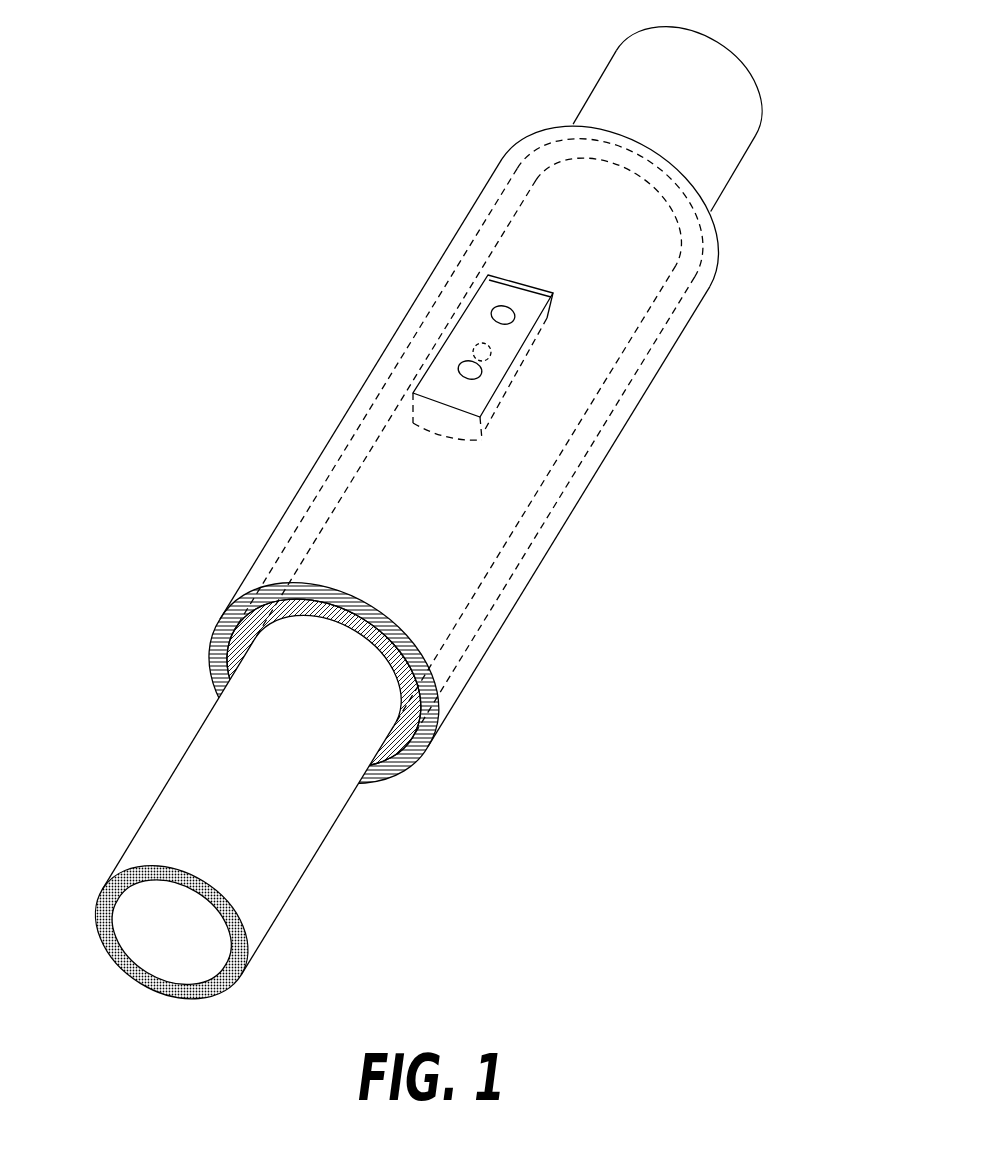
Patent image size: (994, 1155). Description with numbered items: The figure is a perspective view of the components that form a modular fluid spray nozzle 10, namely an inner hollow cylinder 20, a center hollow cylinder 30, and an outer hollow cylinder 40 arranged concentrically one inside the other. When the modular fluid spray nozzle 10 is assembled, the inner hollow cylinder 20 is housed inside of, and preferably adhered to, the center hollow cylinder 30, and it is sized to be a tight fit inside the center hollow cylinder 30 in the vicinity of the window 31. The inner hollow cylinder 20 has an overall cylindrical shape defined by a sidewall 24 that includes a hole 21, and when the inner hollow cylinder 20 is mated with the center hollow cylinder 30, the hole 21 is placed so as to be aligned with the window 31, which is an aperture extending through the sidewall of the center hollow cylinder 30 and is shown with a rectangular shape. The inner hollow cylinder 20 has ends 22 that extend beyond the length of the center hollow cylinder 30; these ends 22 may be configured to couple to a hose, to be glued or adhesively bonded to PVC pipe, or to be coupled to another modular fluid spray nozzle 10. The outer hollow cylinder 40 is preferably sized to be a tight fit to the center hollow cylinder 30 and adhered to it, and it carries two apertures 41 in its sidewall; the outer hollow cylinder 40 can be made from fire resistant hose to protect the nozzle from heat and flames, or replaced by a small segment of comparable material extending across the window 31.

The modular fluid spray nozzle 10 is at (280, 490).
The inner hollow cylinder 20 is at (623, 98).
The hole 21 is at (493, 360).
The ends 22 is at (710, 82).
The sidewall 24 is at (148, 982).
The center hollow cylinder 30 is at (430, 734).
The window 31 is at (450, 413).
The outer hollow cylinder 40 is at (600, 337).
The apertures 41 is at (500, 312).